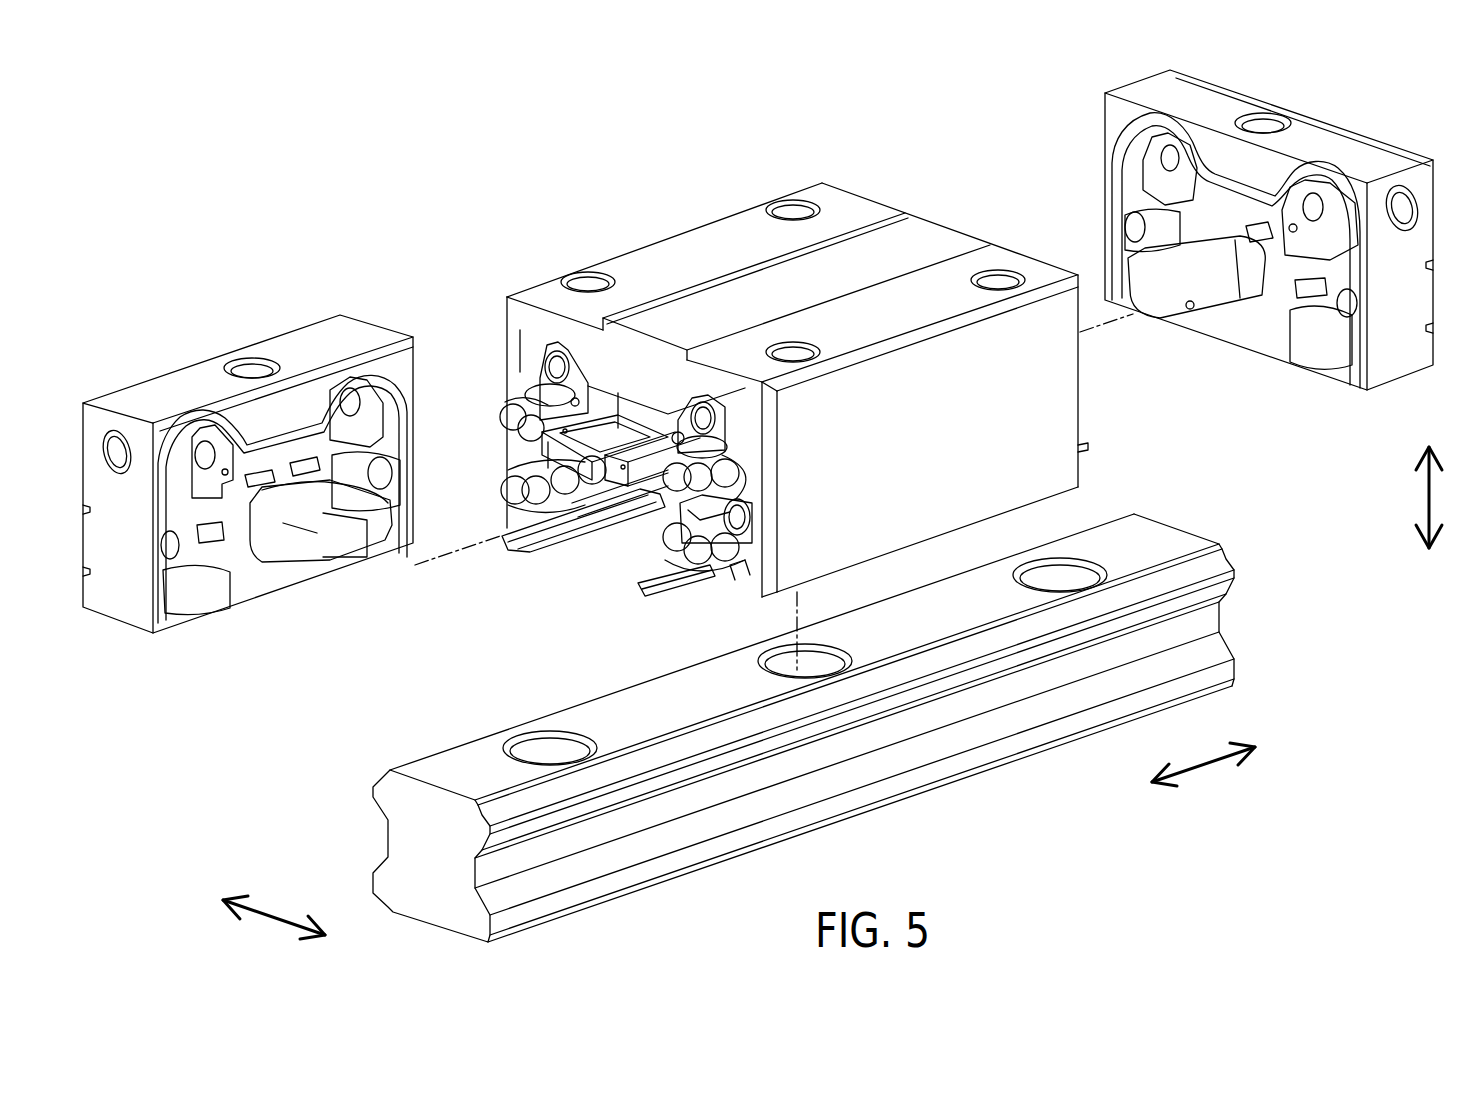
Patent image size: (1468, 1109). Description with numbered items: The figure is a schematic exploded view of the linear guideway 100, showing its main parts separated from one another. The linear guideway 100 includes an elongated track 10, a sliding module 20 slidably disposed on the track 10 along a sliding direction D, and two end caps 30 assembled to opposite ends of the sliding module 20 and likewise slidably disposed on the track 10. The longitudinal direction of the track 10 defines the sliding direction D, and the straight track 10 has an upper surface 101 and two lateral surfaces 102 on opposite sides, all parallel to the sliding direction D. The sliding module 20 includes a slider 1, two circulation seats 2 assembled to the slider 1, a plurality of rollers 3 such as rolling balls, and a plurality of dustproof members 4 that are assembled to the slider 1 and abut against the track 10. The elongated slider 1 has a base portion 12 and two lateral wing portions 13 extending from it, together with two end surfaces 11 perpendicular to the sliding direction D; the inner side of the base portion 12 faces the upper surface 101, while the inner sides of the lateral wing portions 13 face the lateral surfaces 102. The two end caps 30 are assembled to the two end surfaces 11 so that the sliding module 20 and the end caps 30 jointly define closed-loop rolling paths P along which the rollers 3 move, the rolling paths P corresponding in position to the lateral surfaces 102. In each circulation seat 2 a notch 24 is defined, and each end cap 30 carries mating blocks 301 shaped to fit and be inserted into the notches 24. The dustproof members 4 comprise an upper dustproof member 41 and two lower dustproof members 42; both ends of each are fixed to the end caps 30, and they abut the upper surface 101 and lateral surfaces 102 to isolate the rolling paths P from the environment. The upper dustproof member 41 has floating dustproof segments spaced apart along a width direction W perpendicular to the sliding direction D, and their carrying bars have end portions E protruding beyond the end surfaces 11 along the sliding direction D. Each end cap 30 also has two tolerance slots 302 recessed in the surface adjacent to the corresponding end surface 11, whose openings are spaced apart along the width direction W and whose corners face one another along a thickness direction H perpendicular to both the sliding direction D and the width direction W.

The linear guideway 100 is at (172, 125).
The slider 1 is at (1083, 398).
The track 10 is at (1173, 530).
The upper surface 101 is at (470, 765).
The lateral surfaces 102 is at (382, 840).
The sliding module 20 is at (710, 226).
The end surfaces 11 is at (528, 334).
The base portion 12 is at (926, 240).
The lateral wing portions 13 is at (985, 462).
The notch 24 is at (546, 463).
The circulation seats 2 is at (540, 368).
The rollers 3 is at (720, 476).
The dustproof members 4 is at (601, 626).
The upper dustproof member 41 is at (638, 488).
The lower dustproof members 42 is at (511, 552).
The end caps 30 is at (140, 392).
The mating blocks 301 is at (223, 538).
The tolerance slots 302 is at (262, 468).
The end portions E is at (565, 430).
The rolling paths P is at (737, 580).
The thickness direction H is at (1419, 497).
The sliding direction D is at (1203, 757).
The width direction W is at (274, 909).